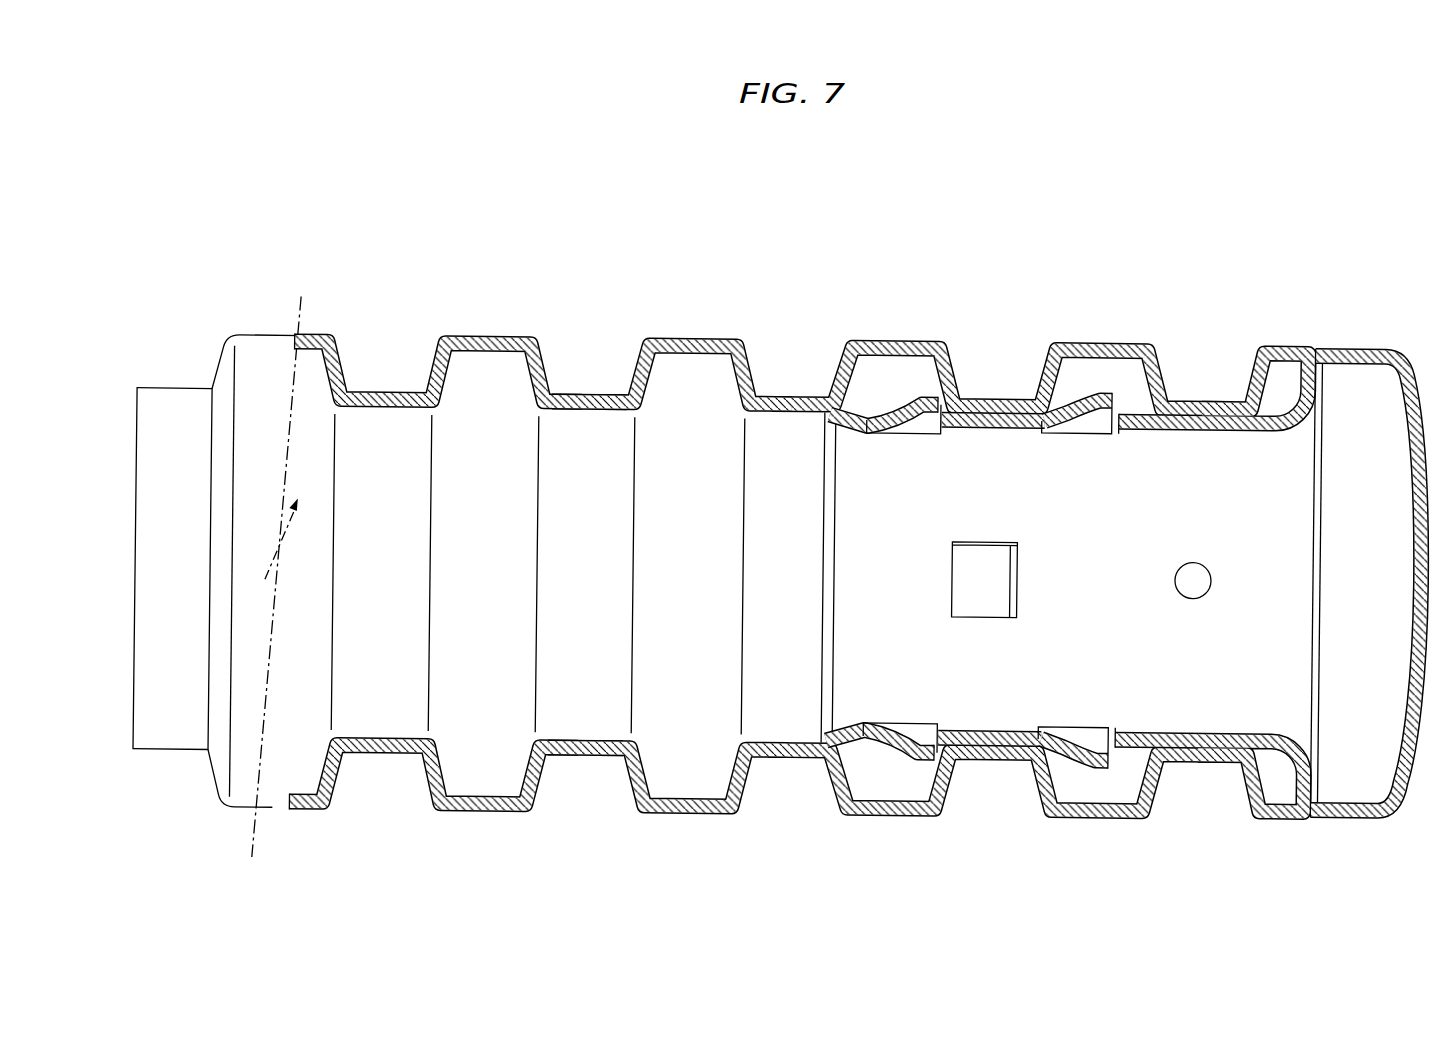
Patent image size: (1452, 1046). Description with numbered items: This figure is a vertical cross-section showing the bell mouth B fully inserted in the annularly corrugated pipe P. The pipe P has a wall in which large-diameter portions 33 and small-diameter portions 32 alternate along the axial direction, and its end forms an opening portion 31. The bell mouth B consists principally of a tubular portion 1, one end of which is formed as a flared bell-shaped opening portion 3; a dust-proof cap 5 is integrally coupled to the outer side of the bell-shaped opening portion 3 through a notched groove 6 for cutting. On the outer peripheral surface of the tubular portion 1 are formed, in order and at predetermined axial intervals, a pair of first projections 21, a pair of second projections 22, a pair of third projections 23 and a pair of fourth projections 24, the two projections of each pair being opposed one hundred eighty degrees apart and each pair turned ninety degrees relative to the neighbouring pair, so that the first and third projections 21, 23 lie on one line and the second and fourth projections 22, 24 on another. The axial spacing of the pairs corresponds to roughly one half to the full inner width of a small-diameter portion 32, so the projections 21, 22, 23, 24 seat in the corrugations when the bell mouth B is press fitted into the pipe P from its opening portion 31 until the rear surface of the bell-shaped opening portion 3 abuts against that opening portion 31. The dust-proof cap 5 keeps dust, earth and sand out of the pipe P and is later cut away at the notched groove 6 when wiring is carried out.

The tubular portion 1 is at (1233, 495).
The bell-shaped opening portion 3 is at (1295, 762).
The dust-proof cap 5 is at (1370, 812).
The notched groove for cutting 6 is at (1312, 806).
The first projections 21 is at (905, 397).
The second projections 22 is at (997, 561).
The third projections 23 is at (1105, 390).
The fourth projections 24 is at (1193, 568).
The opening portion 31 is at (1285, 366).
The small-diameter portion 32 is at (588, 396).
The large-diameter portion 33 is at (690, 341).
The pipe P is at (408, 310).
The bell mouth B is at (1361, 559).